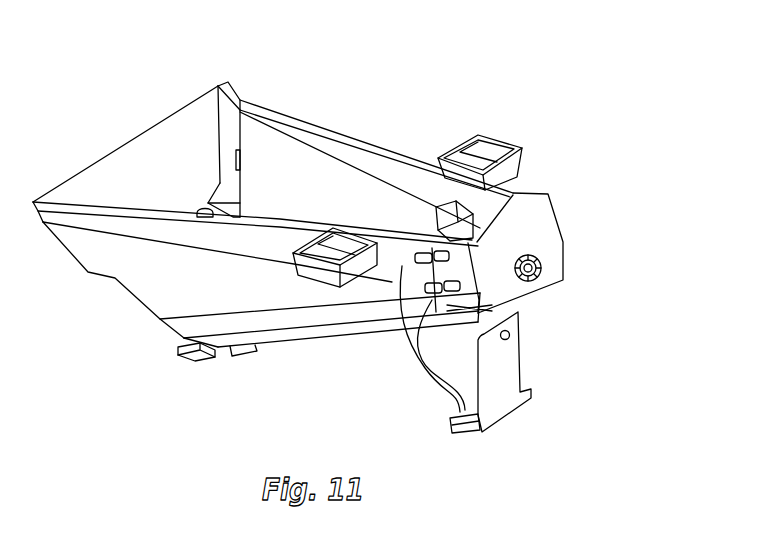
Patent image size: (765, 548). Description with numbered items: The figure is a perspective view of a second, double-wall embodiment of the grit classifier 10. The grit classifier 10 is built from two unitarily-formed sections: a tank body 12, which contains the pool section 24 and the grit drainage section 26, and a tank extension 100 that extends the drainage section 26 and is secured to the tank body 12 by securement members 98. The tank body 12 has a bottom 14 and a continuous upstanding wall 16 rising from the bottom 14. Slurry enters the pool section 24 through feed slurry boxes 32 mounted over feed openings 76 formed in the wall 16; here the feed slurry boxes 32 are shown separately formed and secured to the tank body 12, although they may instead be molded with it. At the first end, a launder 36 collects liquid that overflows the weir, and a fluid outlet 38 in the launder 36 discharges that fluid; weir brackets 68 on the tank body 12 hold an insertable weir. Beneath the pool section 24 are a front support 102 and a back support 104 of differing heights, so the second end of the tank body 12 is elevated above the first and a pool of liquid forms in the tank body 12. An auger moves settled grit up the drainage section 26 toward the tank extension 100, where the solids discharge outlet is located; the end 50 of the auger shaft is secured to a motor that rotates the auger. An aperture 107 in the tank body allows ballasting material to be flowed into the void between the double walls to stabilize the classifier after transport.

The grit classifier 10 is at (390, 78).
The tank body 12 is at (192, 102).
The bottom 14 is at (290, 330).
The wall 16 is at (163, 293).
The pool section 24 is at (298, 170).
The grit drainage section 26 is at (486, 223).
The feed slurry box 32 is at (343, 250).
The launder 36 is at (106, 184).
The fluid outlet 38 is at (199, 209).
The end of auger shaft 50 is at (542, 268).
The weir brackets 68 is at (241, 160).
The feed openings 76 is at (456, 212).
The securement members 98 is at (417, 265).
The tank extension 100 is at (545, 212).
The front support 102 is at (228, 348).
The back support 104 is at (521, 376).
The aperture 107 is at (512, 336).